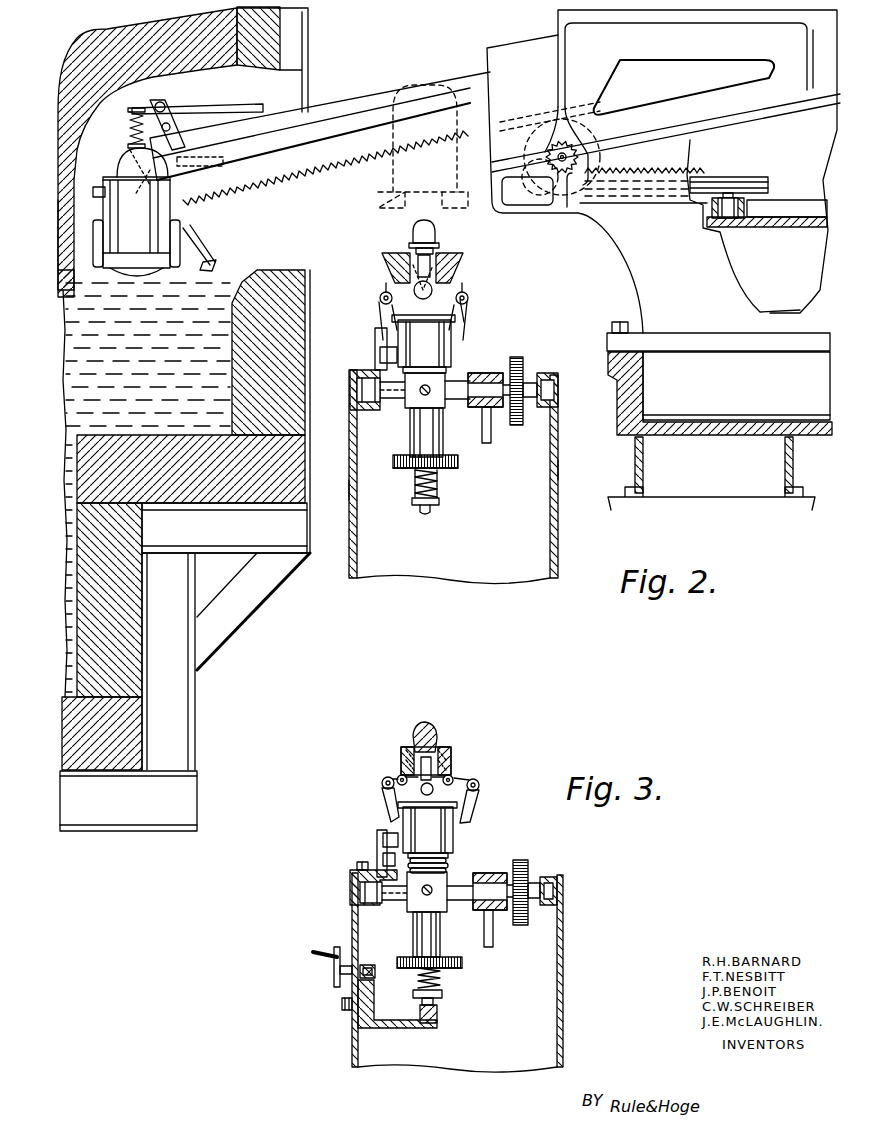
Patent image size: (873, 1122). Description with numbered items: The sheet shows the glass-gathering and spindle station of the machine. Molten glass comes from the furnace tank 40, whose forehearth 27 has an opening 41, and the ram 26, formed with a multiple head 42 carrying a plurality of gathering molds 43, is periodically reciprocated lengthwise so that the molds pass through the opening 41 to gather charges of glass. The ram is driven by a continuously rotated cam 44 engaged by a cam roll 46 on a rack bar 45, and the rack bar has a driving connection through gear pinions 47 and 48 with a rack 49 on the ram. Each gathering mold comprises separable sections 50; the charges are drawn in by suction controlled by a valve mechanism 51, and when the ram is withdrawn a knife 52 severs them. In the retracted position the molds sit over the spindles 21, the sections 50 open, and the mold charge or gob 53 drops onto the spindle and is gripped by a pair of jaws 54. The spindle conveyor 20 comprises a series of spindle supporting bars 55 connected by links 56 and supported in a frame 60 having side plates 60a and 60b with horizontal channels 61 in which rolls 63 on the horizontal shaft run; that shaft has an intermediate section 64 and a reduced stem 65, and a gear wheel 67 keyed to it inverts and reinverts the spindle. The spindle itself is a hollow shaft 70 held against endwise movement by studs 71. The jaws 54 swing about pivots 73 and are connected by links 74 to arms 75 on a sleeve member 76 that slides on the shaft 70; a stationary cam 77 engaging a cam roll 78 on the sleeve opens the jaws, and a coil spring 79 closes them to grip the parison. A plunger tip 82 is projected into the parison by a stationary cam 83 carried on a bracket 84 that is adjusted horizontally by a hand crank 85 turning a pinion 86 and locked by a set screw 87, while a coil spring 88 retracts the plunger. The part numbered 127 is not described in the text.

In FIG. 2, the spindle conveyor 20 is at (394, 407).
In FIG. 3, the spindle conveyor 20 is at (462, 915).
In FIG. 2, the spindle 21 is at (454, 345).
In FIG. 3, the spindle 21 is at (464, 826).
In FIG. 2, the ram 26 is at (376, 98).
In FIG. 2, the forehearth 27 is at (212, 70).
In FIG. 2, the furnace tank 40 is at (123, 673).
In FIG. 2, the opening 41 is at (267, 83).
In FIG. 2, the multiple head 42 is at (108, 175).
In FIG. 2, the gathering molds 43 is at (143, 222).
In FIG. 2, the cam 44 is at (770, 228).
In FIG. 2, the rack bar 45 is at (707, 178).
In FIG. 2, the cam roll 46 is at (722, 220).
In FIG. 2, the gear pinion 47 is at (546, 157).
In FIG. 2, the gear pinion 48 is at (600, 135).
In FIG. 2, the rack 49 is at (427, 150).
In FIG. 2, the separable sections 50 is at (185, 252).
In FIG. 2, the valve mechanism 51 is at (130, 126).
In FIG. 2, the knife 52 is at (215, 266).
In FIG. 2, the mold charge 53 is at (433, 228).
In FIG. 3, the mold charge 53 is at (432, 732).
In FIG. 2, the jaws 54 is at (450, 258).
In FIG. 3, the jaws 54 is at (452, 756).
In FIG. 2, the spindle supporting link 55 is at (468, 378).
In FIG. 3, the spindle supporting link 55 is at (478, 881).
In FIG. 2, the links 56 is at (480, 407).
In FIG. 3, the links 56 is at (490, 874).
In FIG. 2, the frame 60 is at (470, 578).
In FIG. 2, the side plate 60a is at (558, 470).
In FIG. 3, the side plate 60a is at (563, 935).
In FIG. 2, the side plate 60b is at (349, 493).
In FIG. 3, the side plate 60b is at (352, 1045).
In FIG. 2, the channels 61 is at (366, 405).
In FIG. 3, the channels 61 is at (356, 886).
In FIG. 2, the rolls 63 is at (556, 383).
In FIG. 3, the rolls 63 is at (362, 890).
In FIG. 2, the intermediate section 64 is at (430, 420).
In FIG. 3, the intermediate section 64 is at (418, 913).
In FIG. 2, the stem 65 is at (372, 388).
In FIG. 3, the stem 65 is at (392, 901).
In FIG. 2, the gear wheel 67 is at (517, 357).
In FIG. 3, the gear wheel 67 is at (522, 862).
In FIG. 2, the hollow shaft 70 is at (458, 462).
In FIG. 3, the hollow shaft 70 is at (436, 950).
In FIG. 2, the studs 71 is at (421, 396).
In FIG. 3, the studs 71 is at (436, 882).
In FIG. 2, the pivots 73 is at (447, 290).
In FIG. 3, the pivots 73 is at (421, 790).
In FIG. 2, the links 74 is at (462, 293).
In FIG. 3, the links 74 is at (456, 779).
In FIG. 2, the arms 75 is at (466, 310).
In FIG. 3, the arms 75 is at (475, 800).
In FIG. 2, the sleeve member 76 is at (423, 344).
In FIG. 3, the sleeve member 76 is at (427, 830).
In FIG. 2, the stationary cam 77 is at (377, 336).
In FIG. 3, the stationary cam 77 is at (383, 860).
In FIG. 2, the cam roll 78 is at (380, 355).
In FIG. 3, the cam roll 78 is at (385, 840).
In FIG. 3, the coil spring 79 is at (447, 866).
In FIG. 3, the plunger tip 82 is at (405, 760).
In FIG. 3, the stationary cam 83 is at (437, 1012).
In FIG. 3, the bracket 84 is at (396, 1028).
In FIG. 3, the hand crank 85 is at (312, 956).
In FIG. 3, the pinion 86 is at (368, 966).
In FIG. 3, the set screw 87 is at (342, 1004).
In FIG. 2, the coil spring 88 is at (437, 487).
In FIG. 3, the coil spring 88 is at (441, 983).
In FIG. 2, the gear 127 is at (393, 463).
In FIG. 3, the gear 127 is at (462, 967).